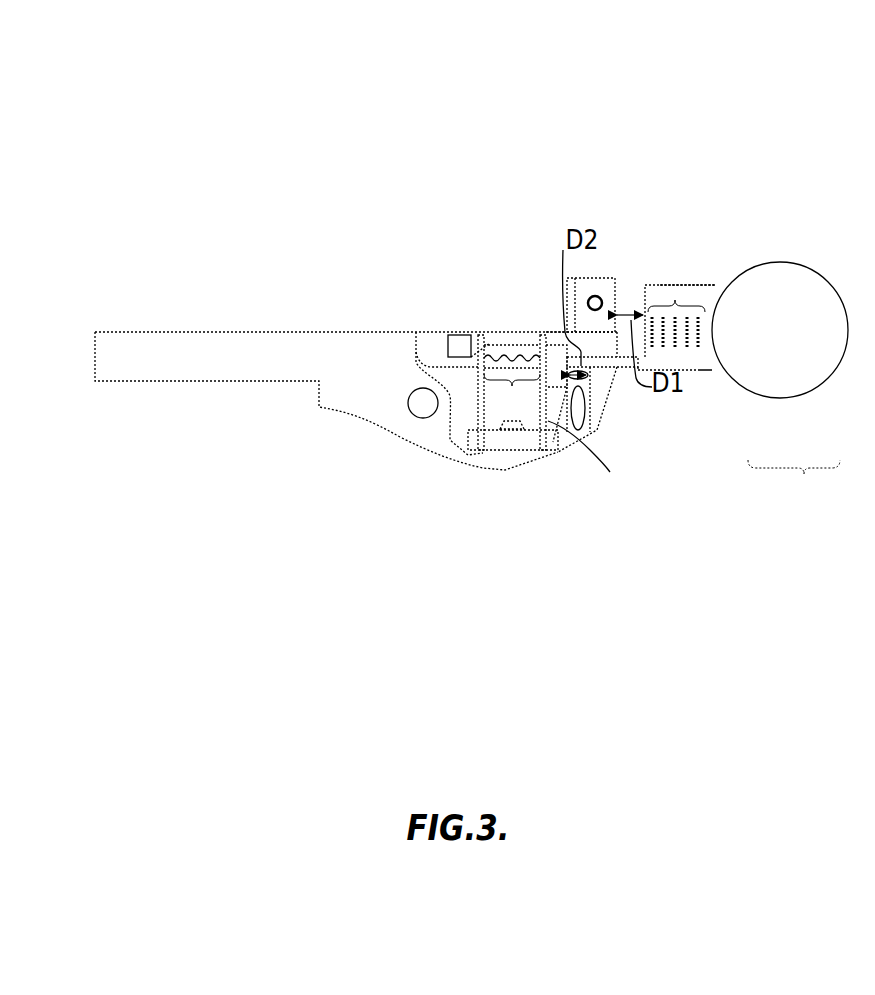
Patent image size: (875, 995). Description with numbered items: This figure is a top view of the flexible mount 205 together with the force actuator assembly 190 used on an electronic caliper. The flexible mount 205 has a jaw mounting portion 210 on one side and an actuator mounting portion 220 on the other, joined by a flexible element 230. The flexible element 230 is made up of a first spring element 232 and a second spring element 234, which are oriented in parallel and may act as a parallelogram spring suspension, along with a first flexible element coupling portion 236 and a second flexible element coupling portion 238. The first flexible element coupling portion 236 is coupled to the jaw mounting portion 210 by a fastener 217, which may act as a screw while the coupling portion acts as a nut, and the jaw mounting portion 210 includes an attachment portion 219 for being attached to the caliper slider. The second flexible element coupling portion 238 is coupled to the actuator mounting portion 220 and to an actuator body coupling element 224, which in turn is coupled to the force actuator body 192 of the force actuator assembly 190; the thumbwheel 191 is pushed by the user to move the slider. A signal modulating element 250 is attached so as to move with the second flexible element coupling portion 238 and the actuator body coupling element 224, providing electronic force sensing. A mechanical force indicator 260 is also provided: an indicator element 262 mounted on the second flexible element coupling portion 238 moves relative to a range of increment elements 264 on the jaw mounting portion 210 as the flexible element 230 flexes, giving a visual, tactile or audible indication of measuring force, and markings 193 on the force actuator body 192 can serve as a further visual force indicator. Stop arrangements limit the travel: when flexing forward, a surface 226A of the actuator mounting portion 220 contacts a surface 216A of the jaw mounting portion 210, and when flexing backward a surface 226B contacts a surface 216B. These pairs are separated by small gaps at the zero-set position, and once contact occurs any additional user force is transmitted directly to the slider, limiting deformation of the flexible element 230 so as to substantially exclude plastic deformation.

The flexible mount 205 is at (374, 134).
The jaw mounting portion 210 is at (468, 479).
The signal modulating element 250 is at (459, 335).
The second flexible element coupling portion 238 is at (489, 341).
The first spring element 232 is at (484, 412).
The range of increment elements 264 is at (500, 352).
The indicator element 262 is at (532, 352).
The force indicator 260 is at (515, 392).
The first flexible element coupling portion 236 is at (512, 442).
The fastener 217 is at (518, 428).
The actuator mounting portion 220 is at (550, 322).
The attachment portion 219 is at (599, 277).
The surface of the jaw mounting portion 216A is at (645, 295).
The surface of the actuator mounting portion 226A is at (675, 300).
The markings 193 is at (690, 285).
The actuator body coupling element 224 is at (624, 368).
The second spring element 234 is at (580, 385).
The flexible element 230 is at (548, 422).
The surface of the jaw mounting portion 216B is at (549, 405).
The surface of the actuator mounting portion 226B is at (604, 402).
The thumbwheel 191 is at (812, 393).
The force actuator body 192 is at (706, 373).
The force actuator assembly 190 is at (794, 481).